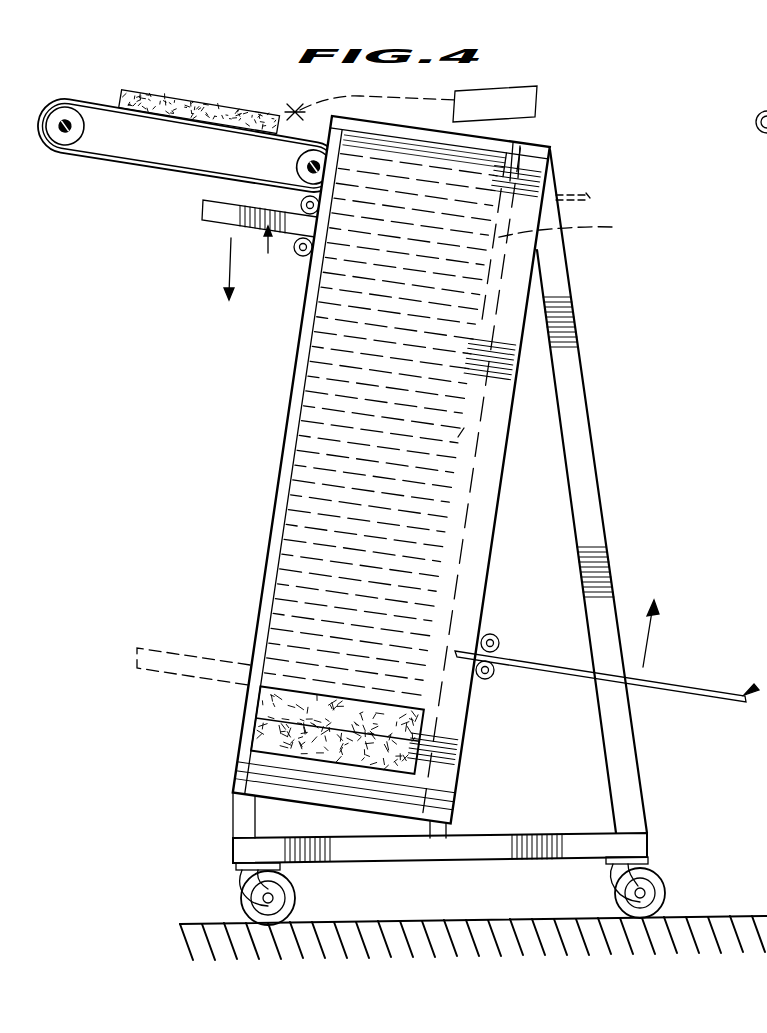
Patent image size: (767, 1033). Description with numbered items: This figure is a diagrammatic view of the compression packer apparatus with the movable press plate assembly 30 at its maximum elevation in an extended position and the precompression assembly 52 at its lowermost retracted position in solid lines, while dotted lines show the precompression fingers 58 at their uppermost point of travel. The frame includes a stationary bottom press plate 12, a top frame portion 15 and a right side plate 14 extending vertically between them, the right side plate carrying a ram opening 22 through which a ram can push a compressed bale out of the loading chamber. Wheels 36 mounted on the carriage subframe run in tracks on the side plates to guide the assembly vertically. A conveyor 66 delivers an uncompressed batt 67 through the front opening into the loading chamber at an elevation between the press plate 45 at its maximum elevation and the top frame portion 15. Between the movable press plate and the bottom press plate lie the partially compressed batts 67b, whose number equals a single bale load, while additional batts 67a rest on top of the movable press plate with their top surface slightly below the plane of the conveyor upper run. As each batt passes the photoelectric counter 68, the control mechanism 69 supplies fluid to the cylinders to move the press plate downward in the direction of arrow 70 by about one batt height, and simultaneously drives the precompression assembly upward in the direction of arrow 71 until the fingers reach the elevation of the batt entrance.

The bottom press plate 12 is at (433, 812).
The right side plate 14 is at (303, 387).
The top frame portion 15 is at (533, 146).
The ram opening 22 is at (257, 717).
The movable press plate assembly 30 is at (266, 252).
The wheels 36 is at (300, 257).
The press plate 45 is at (220, 213).
The precompression assembly 52 is at (752, 690).
The precompression fingers 58 is at (586, 193).
The conveyor 66 is at (127, 163).
The batt 67 is at (151, 101).
The batts on top of movable press plate 67a is at (571, 225).
The partially compressed batts 67b is at (472, 432).
The counter 68 is at (300, 106).
The control mechanism 69 is at (518, 91).
The arrow 70 is at (228, 250).
The arrow 71 is at (645, 657).